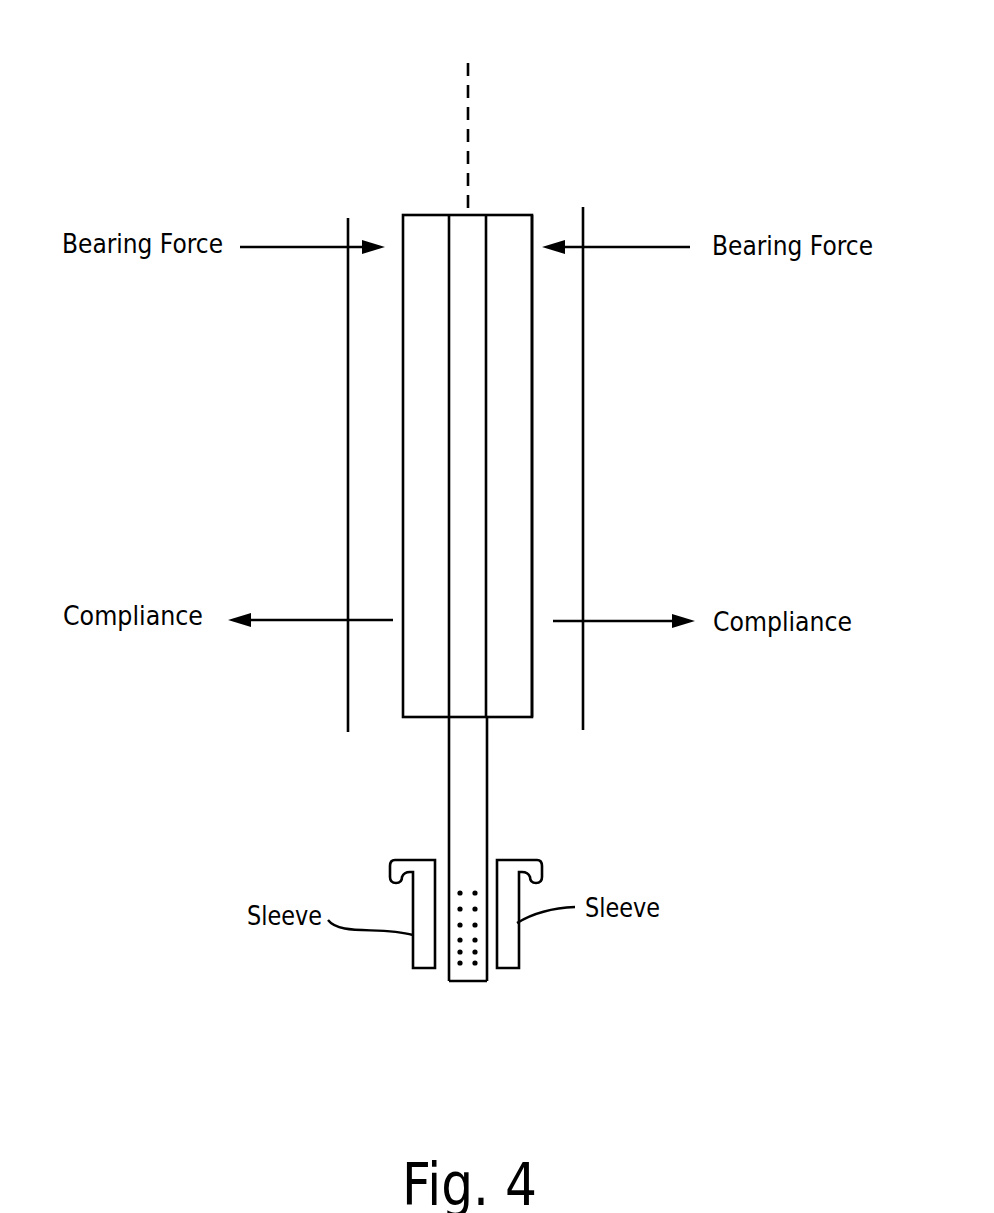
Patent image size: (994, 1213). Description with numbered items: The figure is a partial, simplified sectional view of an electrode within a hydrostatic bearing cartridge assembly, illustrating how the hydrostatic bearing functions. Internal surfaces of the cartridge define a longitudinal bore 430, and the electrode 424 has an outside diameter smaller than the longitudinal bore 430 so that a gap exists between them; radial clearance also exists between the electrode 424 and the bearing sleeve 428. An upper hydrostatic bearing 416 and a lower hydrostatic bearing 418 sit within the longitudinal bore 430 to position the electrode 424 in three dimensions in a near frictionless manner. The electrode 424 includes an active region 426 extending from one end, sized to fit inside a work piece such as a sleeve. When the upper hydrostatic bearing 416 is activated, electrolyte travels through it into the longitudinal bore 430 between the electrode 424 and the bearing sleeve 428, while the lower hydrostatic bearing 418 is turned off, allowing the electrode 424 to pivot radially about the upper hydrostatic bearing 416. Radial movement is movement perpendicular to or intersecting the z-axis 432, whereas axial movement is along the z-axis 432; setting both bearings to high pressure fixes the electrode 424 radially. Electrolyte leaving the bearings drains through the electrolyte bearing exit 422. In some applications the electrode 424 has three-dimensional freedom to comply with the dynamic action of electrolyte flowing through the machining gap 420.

The upper hydrostatic bearing 416 is at (533, 241).
The lower hydrostatic bearing 418 is at (533, 607).
The machining gap 420 is at (440, 878).
The electrolyte bearing exit 422 is at (375, 715).
The electrode 424 is at (517, 438).
The active region 426 is at (463, 868).
The bearing sleeve 428 is at (336, 371).
The longitudinal bore 430 is at (558, 290).
The z-axis 432 is at (470, 107).